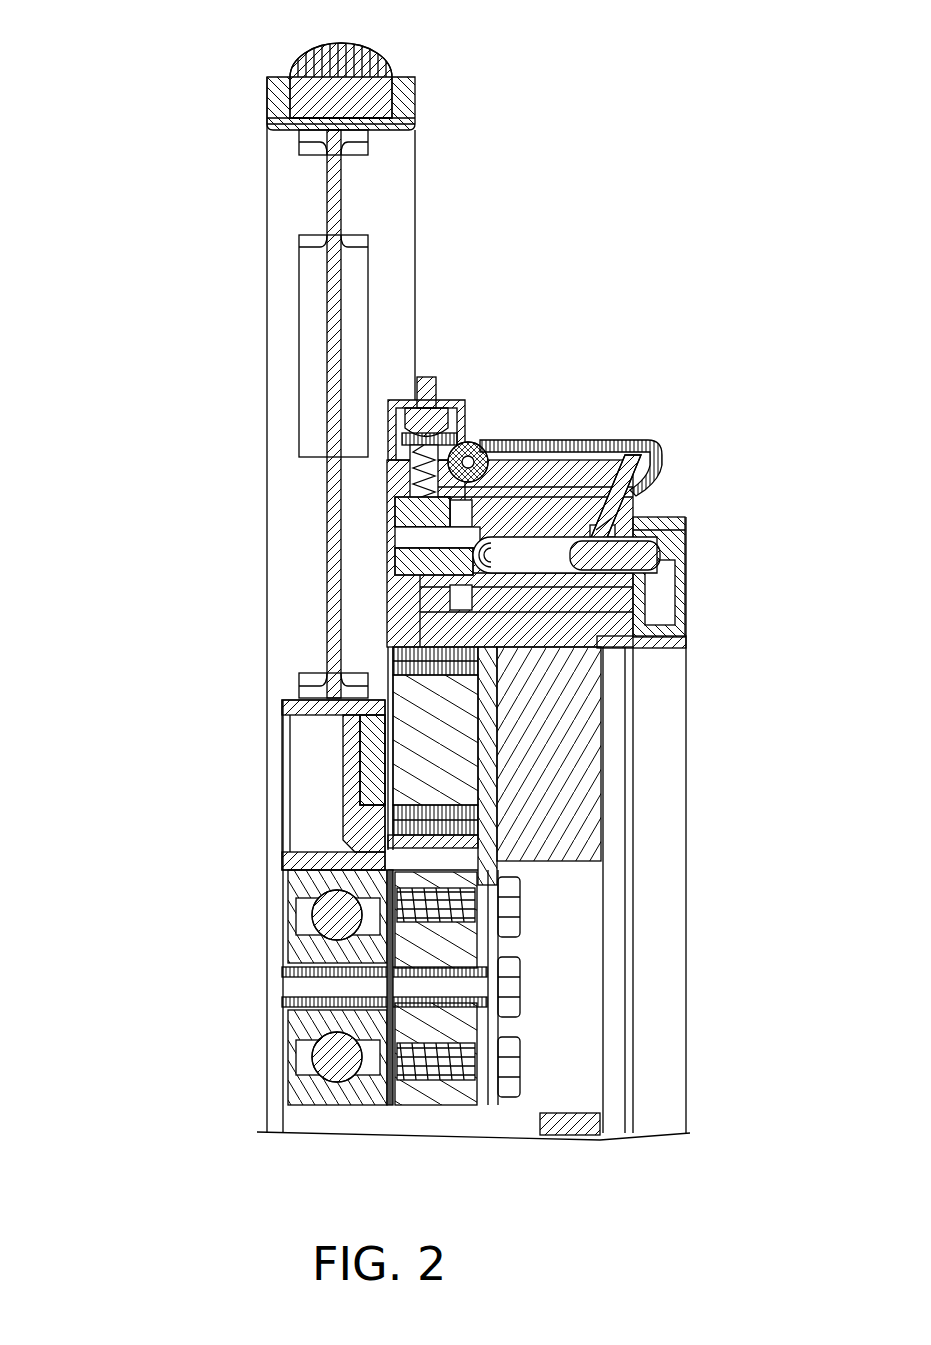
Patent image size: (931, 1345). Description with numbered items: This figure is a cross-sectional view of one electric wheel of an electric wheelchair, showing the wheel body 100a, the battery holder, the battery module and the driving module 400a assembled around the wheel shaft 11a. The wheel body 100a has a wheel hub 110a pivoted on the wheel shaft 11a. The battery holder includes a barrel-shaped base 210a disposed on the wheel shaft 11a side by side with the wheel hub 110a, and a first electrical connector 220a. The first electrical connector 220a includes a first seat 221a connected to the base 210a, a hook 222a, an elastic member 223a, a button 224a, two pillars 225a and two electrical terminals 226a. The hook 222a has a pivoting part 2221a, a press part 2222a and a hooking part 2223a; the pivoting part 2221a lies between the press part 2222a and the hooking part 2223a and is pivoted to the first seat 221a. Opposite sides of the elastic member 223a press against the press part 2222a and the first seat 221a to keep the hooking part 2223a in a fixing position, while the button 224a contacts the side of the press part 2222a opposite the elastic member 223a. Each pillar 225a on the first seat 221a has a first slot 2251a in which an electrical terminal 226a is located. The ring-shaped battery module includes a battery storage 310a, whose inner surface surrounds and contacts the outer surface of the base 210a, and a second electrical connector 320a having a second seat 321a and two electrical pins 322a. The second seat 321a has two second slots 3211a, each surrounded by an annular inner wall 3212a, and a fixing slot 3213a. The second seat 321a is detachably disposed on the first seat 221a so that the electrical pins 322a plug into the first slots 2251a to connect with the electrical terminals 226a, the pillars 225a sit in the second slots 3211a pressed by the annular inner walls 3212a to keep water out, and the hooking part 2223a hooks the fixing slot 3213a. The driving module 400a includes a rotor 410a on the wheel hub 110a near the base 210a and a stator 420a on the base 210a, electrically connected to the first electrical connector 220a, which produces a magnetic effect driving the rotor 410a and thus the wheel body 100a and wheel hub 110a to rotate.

The wheel body 100a is at (386, 76).
The first electrical connector 220a is at (99, 160).
The hook 222a is at (179, 115).
The pivoting part 2221a is at (490, 445).
The press part 2222a is at (470, 443).
The hooking part 2223a is at (588, 441).
The first seat 221a is at (400, 624).
The elastic member 223a is at (410, 470).
The button 224a is at (423, 414).
The pillar 225a is at (400, 526).
The first slot 2251a is at (440, 537).
The electrical terminal 226a is at (400, 572).
The second electrical connector 320a is at (771, 393).
The second seat 321a is at (630, 518).
The electrical pin 322a is at (613, 537).
The second slot 3211a is at (635, 492).
The annular inner wall 3212a is at (650, 443).
The fixing slot 3213a is at (606, 523).
The battery storage 310a is at (666, 770).
The base 210a is at (540, 836).
The driving module 400a is at (189, 737).
The rotor 410a is at (358, 758).
The stator 420a is at (437, 777).
The wheel hub 110a is at (350, 740).
The wheel shaft 11a is at (345, 1011).